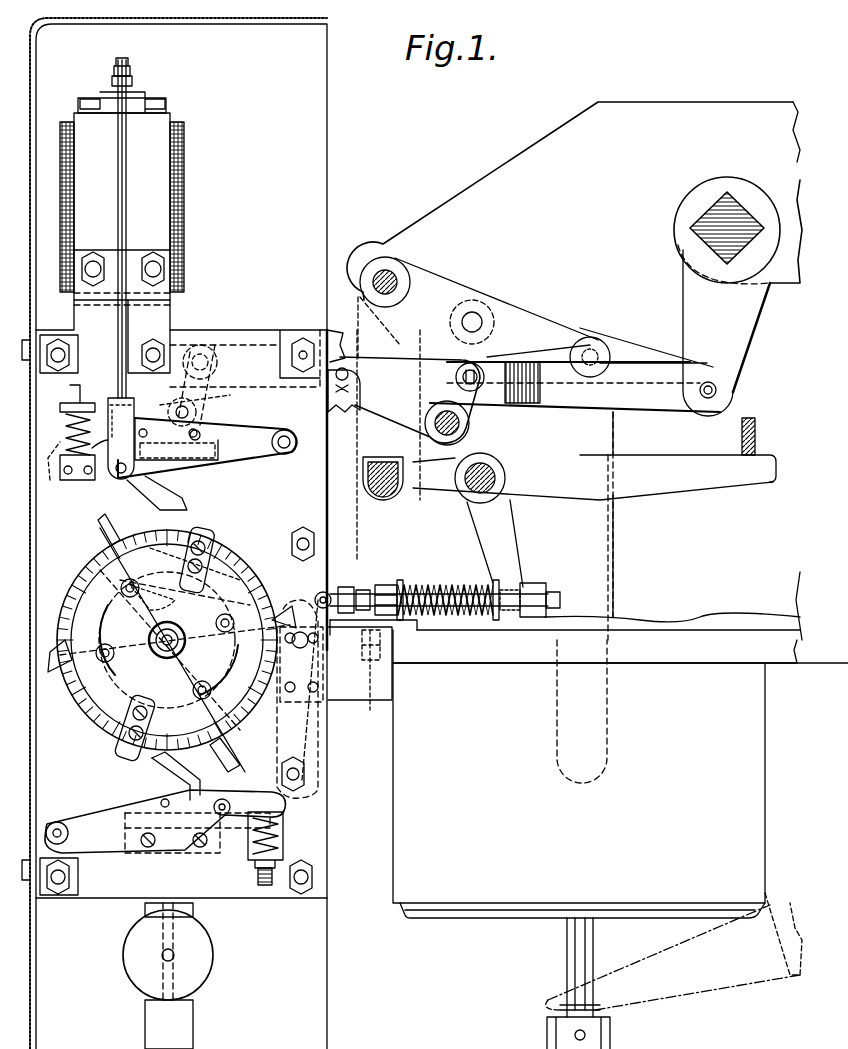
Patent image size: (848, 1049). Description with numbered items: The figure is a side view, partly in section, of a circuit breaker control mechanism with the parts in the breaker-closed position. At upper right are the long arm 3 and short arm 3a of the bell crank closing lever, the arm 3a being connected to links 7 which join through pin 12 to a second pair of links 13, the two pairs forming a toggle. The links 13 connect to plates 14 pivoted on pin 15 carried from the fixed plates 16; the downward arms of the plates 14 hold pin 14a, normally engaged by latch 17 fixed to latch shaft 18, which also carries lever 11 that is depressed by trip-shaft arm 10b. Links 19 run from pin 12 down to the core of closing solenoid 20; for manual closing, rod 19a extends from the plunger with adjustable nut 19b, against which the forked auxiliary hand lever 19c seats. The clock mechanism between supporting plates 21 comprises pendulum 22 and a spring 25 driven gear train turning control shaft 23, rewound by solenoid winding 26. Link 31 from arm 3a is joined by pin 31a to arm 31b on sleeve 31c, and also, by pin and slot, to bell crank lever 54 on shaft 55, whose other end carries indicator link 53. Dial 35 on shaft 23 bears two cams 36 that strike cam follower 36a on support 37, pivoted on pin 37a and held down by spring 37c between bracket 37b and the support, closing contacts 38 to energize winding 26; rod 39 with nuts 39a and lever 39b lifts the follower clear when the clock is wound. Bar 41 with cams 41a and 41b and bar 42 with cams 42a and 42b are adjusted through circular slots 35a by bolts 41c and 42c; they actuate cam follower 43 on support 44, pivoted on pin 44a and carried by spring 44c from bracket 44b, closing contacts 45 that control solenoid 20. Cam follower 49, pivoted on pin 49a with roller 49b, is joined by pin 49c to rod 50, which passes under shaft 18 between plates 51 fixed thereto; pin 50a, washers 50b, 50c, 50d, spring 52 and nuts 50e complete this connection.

The long arm 3 is at (775, 185).
The short arm 3a is at (745, 305).
The links 7 is at (648, 355).
The arm 10b is at (755, 425).
The lever 11 is at (698, 460).
The pin 12 is at (595, 345).
The links 13 is at (540, 325).
The links or plates 14 is at (450, 295).
The pin 14a is at (383, 498).
The pin 15 is at (392, 272).
The fixed plates 16 is at (470, 180).
The latch 17 is at (350, 478).
The latch shaft 18 is at (490, 466).
The links 19 is at (600, 520).
The rod 19a is at (572, 942).
The adjustable nut 19b is at (547, 1030).
The auxiliary hand lever 19c is at (720, 980).
The solenoid 20 is at (740, 705).
The supporting plates 21 is at (264, 336).
The pendulum 22 is at (205, 957).
The control shaft 23 is at (167, 640).
The spring 25 is at (127, 711).
The winding 26 is at (165, 248).
The link 31 is at (548, 402).
The pin 31a is at (222, 340).
The arm 31b is at (215, 392).
The sleeve 31c is at (215, 420).
The dial 35 is at (233, 582).
The circular slots 35a is at (169, 648).
The cams 36 is at (210, 530).
The cam follower 36a is at (200, 460).
The support 37 is at (262, 460).
The pin 37a is at (300, 458).
The bracket 37b is at (68, 406).
The spring 37c is at (52, 476).
The contacts 38 is at (165, 470).
The rod 39 is at (128, 322).
The adjustable nuts 39a is at (130, 66).
The lever 39b is at (134, 84).
The bar 41 is at (172, 650).
The cam 41a is at (110, 535).
The cam 41b is at (228, 745).
The bolts 41c is at (170, 623).
The bar 42 is at (175, 650).
The cam 42a is at (52, 675).
The cam 42b is at (286, 612).
The bolts 42c is at (240, 612).
The cam follower 43 is at (185, 790).
The support 44 is at (102, 823).
The pin 44a is at (68, 830).
The bracket 44b is at (290, 828).
The spring 44c is at (250, 845).
The contacts 45 is at (172, 845).
The cam follower 49 is at (320, 742).
The pin 49a is at (300, 775).
The roller 49b is at (335, 648).
The pin 49c is at (327, 595).
The rod 50 is at (445, 585).
The pin 50a is at (560, 598).
The washer 50b is at (530, 583).
The washer 50c is at (490, 580).
The washer 50d is at (388, 585).
The adjustable nuts 50e is at (380, 585).
The plates 51 is at (508, 525).
The spring 52 is at (468, 620).
The link 53 is at (365, 382).
The bell crank lever 54 is at (398, 365).
The shaft 55 is at (462, 425).